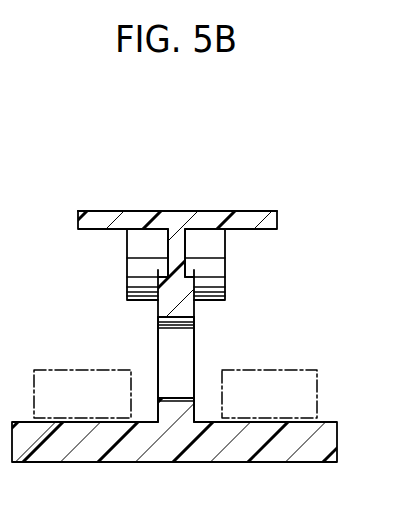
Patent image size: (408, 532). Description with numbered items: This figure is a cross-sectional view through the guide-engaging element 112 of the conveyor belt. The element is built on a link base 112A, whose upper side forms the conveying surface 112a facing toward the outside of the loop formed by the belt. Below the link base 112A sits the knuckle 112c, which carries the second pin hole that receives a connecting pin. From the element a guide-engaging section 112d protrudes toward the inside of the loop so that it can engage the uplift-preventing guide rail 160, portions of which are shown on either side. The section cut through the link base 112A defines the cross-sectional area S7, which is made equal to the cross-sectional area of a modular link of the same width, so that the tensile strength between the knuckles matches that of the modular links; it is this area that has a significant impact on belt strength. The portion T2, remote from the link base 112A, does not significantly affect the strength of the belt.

The guide-engaging element 112 is at (104, 140).
The conveying surface 112a is at (180, 211).
The link base 112A is at (241, 207).
The knuckle 112c is at (210, 252).
The cross-sectional area S7 is at (185, 303).
The uplift-preventing guide rail 160 is at (70, 370).
The portion remote from link base T2 is at (127, 438).
The guide-engaging section 112d is at (234, 423).